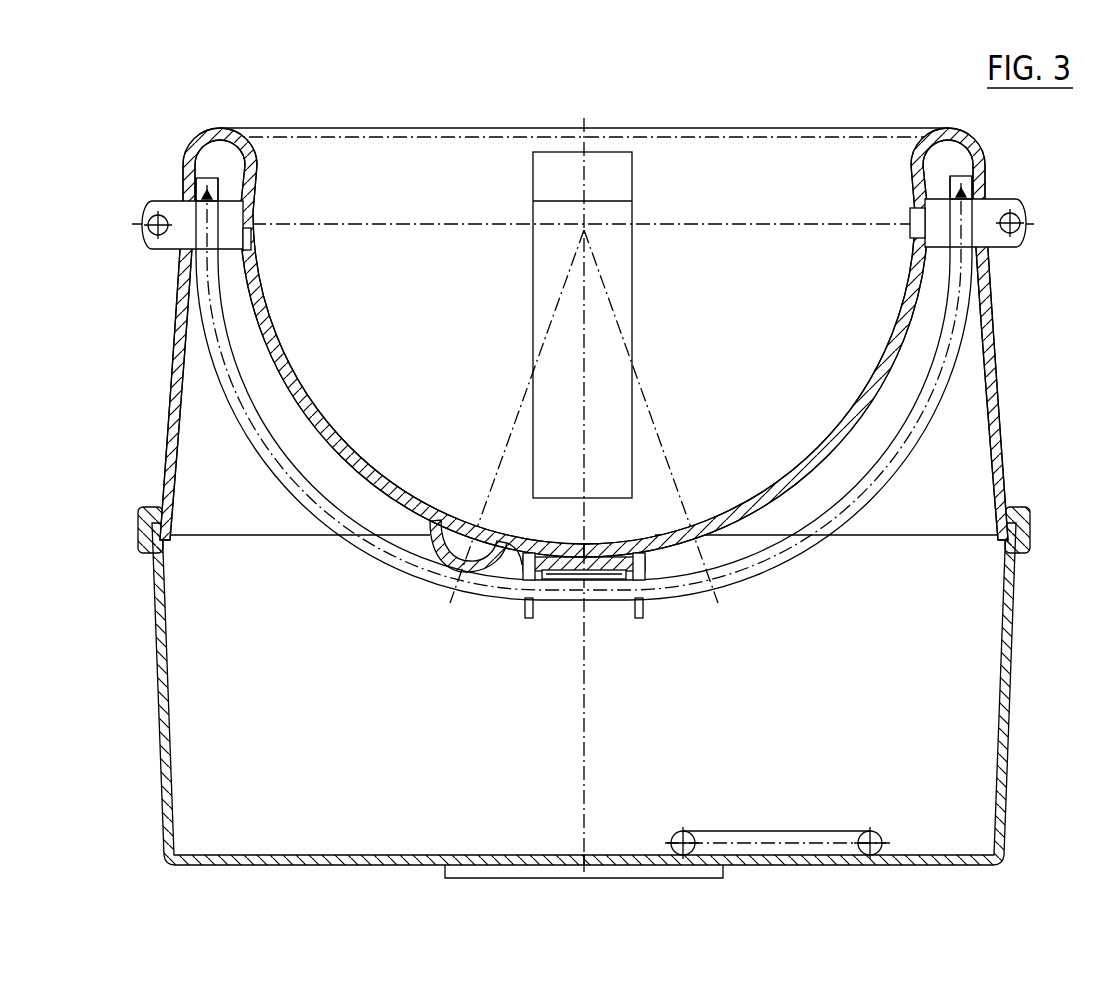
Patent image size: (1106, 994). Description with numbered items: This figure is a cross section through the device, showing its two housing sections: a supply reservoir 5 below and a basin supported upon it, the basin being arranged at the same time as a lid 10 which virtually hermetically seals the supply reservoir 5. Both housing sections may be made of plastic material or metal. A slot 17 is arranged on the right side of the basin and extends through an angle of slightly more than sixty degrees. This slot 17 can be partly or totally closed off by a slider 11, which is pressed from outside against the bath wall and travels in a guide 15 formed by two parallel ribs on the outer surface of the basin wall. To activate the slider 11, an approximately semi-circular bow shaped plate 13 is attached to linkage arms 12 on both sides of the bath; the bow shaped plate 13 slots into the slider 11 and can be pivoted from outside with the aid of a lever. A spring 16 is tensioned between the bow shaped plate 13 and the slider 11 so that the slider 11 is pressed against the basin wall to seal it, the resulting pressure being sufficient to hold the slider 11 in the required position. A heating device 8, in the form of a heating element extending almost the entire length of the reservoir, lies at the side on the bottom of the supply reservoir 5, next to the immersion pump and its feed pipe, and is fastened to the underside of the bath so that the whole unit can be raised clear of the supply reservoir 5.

The supply reservoir 5 is at (152, 685).
The heating device 8 is at (803, 845).
The lid 10 is at (170, 408).
The slider 11 is at (525, 614).
The linkage arms 12 is at (146, 218).
The bow shaped plate 13 is at (390, 562).
The guide 15 is at (510, 567).
The spring 16 is at (614, 575).
The slot 17 is at (559, 208).